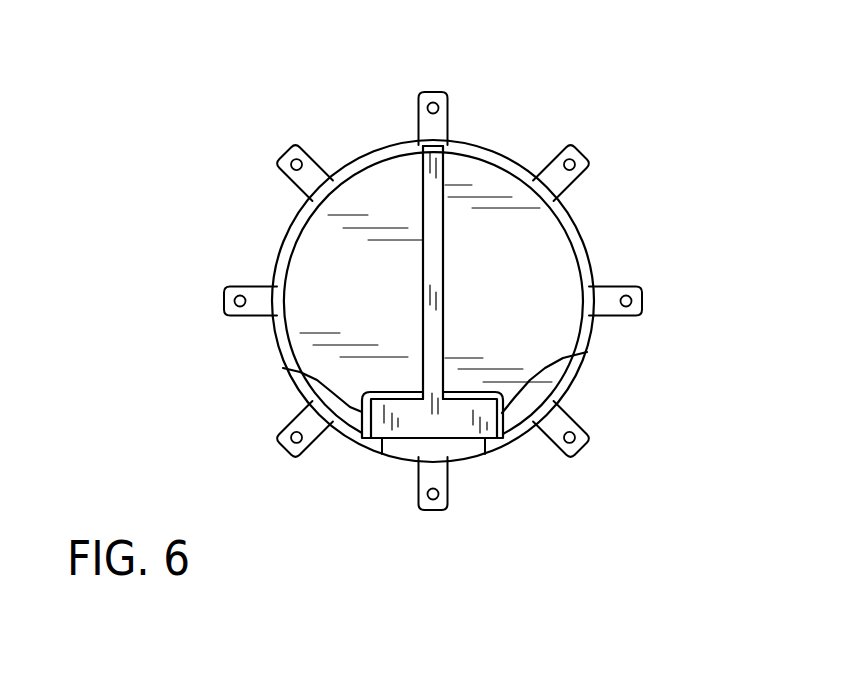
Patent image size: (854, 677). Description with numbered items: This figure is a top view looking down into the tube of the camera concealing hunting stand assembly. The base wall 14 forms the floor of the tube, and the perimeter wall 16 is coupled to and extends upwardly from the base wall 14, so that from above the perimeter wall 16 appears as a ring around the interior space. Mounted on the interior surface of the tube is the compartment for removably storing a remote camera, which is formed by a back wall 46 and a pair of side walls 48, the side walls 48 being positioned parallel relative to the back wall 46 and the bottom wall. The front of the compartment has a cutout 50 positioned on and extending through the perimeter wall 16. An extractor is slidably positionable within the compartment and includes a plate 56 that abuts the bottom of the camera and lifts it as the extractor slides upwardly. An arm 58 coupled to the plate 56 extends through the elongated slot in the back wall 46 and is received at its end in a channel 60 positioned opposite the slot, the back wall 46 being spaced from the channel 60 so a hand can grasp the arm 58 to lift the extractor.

The base wall 14 is at (476, 301).
The perimeter wall 16 is at (573, 237).
The back wall 46 is at (352, 288).
The side walls 48 is at (437, 374).
The cutout 50 is at (472, 468).
The plate 56 is at (434, 490).
The arm 58 is at (433, 268).
The channel 60 is at (443, 147).